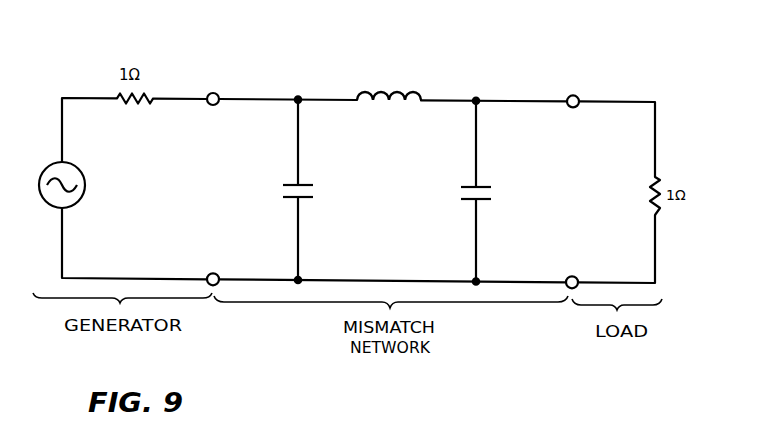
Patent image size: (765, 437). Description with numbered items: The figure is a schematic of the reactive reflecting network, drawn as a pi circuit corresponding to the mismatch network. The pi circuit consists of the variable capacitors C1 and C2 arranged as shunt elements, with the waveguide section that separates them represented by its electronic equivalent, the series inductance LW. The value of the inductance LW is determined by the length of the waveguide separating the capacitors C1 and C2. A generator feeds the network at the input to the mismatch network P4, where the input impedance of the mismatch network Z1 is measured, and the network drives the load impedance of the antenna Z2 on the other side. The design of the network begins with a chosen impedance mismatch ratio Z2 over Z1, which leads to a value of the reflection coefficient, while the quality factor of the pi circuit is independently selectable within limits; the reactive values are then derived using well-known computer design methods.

The input impedance of the mismatch network Z1 is at (184, 188).
The input to the mismatch network P4 is at (213, 112).
The variable capacitor C1 is at (309, 189).
The inductance LW is at (389, 82).
The variable capacitor C2 is at (485, 191).
The load impedance of the antenna Z2 is at (550, 193).